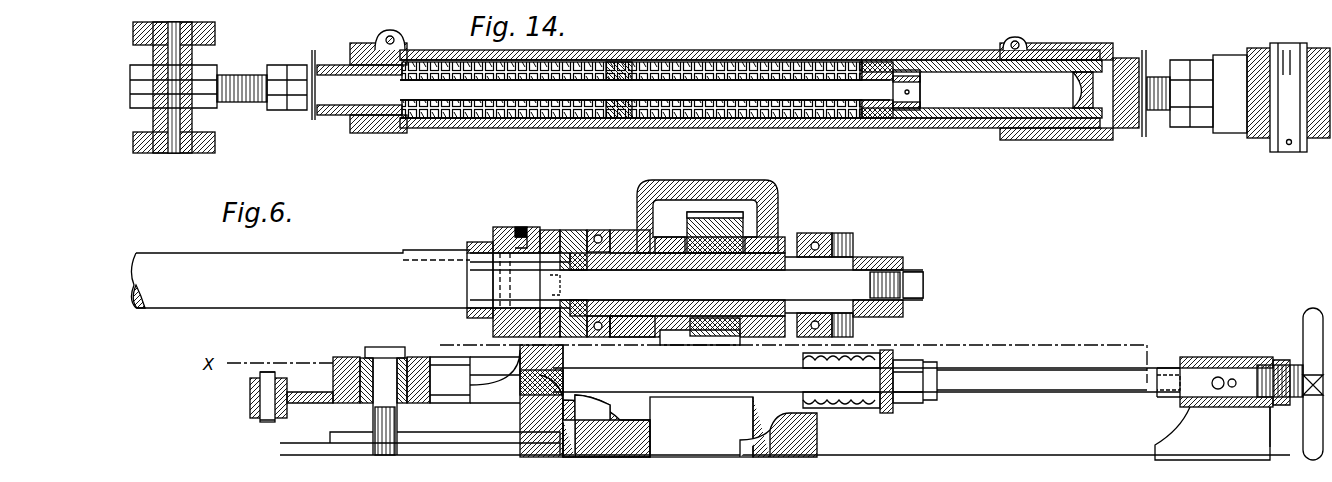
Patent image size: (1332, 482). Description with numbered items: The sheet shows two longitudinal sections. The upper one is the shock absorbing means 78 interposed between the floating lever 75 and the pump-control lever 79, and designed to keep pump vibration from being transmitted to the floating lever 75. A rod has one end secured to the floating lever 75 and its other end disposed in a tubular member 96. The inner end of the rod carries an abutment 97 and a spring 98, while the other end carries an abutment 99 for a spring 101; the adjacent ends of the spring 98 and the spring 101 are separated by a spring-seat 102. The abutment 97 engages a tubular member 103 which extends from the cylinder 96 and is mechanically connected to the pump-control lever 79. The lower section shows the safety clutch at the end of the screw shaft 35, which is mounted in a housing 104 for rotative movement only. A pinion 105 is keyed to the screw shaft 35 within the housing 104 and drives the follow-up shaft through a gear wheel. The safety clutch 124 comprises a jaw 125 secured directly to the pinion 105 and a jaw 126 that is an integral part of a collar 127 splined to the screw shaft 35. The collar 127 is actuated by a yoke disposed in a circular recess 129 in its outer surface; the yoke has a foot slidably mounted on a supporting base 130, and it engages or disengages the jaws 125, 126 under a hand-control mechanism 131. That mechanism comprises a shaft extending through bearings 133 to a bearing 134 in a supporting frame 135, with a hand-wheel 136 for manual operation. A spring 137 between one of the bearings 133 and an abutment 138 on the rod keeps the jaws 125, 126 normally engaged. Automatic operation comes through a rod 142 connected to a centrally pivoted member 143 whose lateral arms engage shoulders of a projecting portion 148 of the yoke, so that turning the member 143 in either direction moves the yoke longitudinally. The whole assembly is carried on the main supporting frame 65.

In FIG. 14, the floating lever 75 is at (215, 30).
In FIG. 14, the abutment 99 is at (362, 133).
In FIG. 14, the shock absorbing means 78 is at (718, 50).
In FIG. 14, the spring 101 is at (478, 118).
In FIG. 14, the spring-seat 102 is at (622, 118).
In FIG. 14, the spring 98 is at (700, 118).
In FIG. 14, the tubular member 96 is at (850, 120).
In FIG. 14, the abutment 97 is at (920, 90).
In FIG. 14, the tubular member 103 is at (1015, 72).
In FIG. 14, the pump-control lever 79 is at (1240, 98).
In FIG. 6, the screw shaft 35 is at (220, 295).
In FIG. 6, the collar 127 is at (475, 243).
In FIG. 6, the circular recess 129 is at (515, 270).
In FIG. 6, the clutch jaw 126 is at (550, 232).
In FIG. 6, the safety clutch 124 is at (570, 232).
In FIG. 6, the clutch jaw 125 is at (597, 230).
In FIG. 6, the housing 104 is at (773, 215).
In FIG. 6, the pinion 105 is at (718, 212).
In FIG. 6, the hand-control mechanism 131 is at (793, 362).
In FIG. 6, the rod 142 is at (250, 390).
In FIG. 6, the projecting portion 148 is at (333, 375).
In FIG. 6, the centrally pivoted member 143 is at (430, 378).
In FIG. 6, the supporting base 130 is at (568, 410).
In FIG. 6, the bearings 133 is at (700, 420).
In FIG. 6, the spring 137 is at (840, 408).
In FIG. 6, the abutment 138 is at (893, 410).
In FIG. 6, the bearing 134 is at (1205, 357).
In FIG. 6, the supporting frame 135 is at (1212, 433).
In FIG. 6, the hand-wheel 136 is at (1308, 310).
In FIG. 6, the main supporting frame 65 is at (1065, 455).